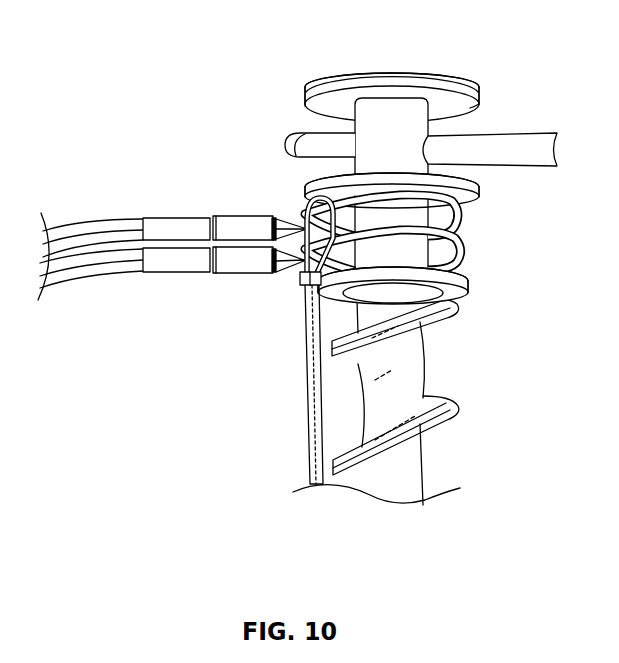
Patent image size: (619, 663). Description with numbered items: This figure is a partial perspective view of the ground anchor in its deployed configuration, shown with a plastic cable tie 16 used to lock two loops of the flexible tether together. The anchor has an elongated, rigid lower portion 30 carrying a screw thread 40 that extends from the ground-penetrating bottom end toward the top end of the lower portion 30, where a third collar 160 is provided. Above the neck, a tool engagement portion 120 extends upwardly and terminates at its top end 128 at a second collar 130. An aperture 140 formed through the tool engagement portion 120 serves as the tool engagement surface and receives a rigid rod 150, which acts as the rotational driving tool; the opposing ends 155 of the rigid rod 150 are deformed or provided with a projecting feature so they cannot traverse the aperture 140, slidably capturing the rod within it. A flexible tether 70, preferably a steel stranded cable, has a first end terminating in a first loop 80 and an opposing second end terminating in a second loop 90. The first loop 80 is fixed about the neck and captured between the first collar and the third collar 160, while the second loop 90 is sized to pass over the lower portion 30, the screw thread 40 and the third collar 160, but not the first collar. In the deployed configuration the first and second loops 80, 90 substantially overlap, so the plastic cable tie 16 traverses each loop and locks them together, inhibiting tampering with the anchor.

The plastic cable tie 16 is at (301, 204).
The lower portion 30 is at (373, 397).
The screw thread 40 is at (453, 417).
The flexible tether 70 is at (120, 273).
The first loop 80 is at (457, 224).
The second loop 90 is at (458, 258).
The tool engagement portion 120 is at (410, 110).
The top end 128 is at (474, 101).
The second collar 130 is at (307, 96).
The aperture 140 is at (352, 158).
The rigid rod 150 is at (538, 168).
The opposing ends 155 is at (293, 134).
The third collar 160 is at (456, 300).